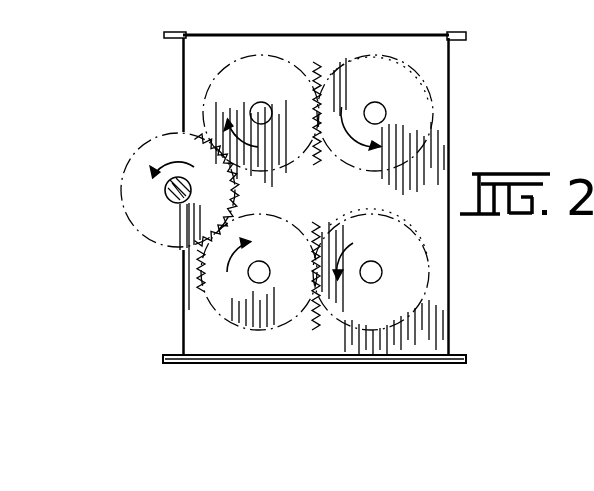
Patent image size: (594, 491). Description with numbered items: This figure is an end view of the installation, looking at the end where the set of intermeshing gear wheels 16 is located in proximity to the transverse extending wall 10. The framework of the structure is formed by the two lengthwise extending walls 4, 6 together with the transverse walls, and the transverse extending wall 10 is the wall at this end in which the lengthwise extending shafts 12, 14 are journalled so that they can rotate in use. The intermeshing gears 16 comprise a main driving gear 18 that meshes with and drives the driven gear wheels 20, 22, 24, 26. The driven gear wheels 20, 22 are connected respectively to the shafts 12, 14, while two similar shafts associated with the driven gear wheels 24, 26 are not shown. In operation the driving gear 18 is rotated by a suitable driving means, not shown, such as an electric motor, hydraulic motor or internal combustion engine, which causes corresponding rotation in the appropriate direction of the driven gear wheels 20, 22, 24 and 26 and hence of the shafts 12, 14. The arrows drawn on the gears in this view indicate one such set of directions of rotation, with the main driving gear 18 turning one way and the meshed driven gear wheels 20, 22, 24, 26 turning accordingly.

The lengthwise extending wall 4 is at (185, 44).
The lengthwise extending wall 6 is at (443, 325).
The transverse extending wall 10 is at (432, 58).
The lengthwise extending shaft 12 is at (250, 105).
The lengthwise extending shaft 14 is at (382, 115).
The set of intermeshing gear wheels 16 is at (423, 230).
The main driving gear 18 is at (133, 174).
The driven gear wheel 20 is at (230, 62).
The driven gear wheel 22 is at (407, 96).
The driven gear wheel 24 is at (408, 272).
The driven gear wheel 26 is at (217, 278).